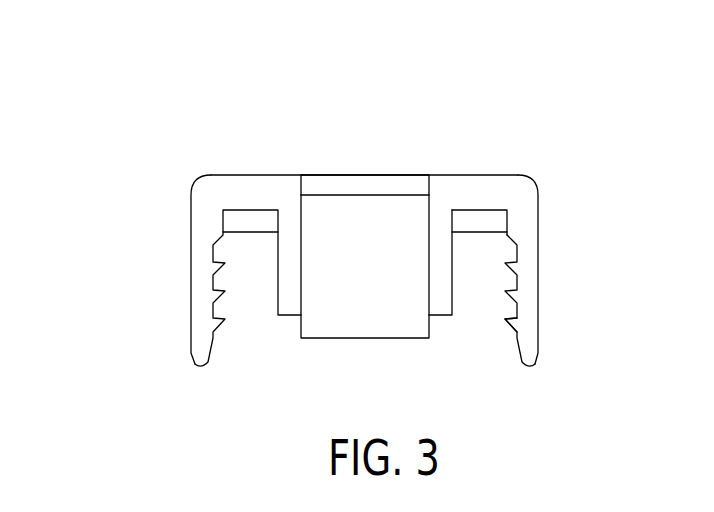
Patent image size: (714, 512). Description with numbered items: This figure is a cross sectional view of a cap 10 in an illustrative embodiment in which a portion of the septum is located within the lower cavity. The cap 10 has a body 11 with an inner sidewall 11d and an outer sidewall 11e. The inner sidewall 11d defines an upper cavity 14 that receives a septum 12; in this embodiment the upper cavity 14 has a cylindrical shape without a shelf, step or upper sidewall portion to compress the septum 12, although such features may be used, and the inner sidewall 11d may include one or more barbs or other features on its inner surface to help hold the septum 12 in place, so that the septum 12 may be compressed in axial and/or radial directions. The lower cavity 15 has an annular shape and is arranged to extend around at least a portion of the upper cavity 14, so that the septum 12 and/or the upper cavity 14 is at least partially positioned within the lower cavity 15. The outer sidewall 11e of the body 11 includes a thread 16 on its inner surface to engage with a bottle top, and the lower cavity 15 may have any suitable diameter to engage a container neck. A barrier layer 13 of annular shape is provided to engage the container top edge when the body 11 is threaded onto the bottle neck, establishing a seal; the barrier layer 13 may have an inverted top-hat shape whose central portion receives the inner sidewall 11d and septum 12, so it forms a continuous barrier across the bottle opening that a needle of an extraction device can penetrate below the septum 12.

The cap 10 is at (116, 111).
The body 11 is at (532, 223).
The inner sidewall 11d is at (440, 287).
The outer sidewall 11e is at (530, 340).
The septum 12 is at (378, 235).
The barrier layer 13 is at (468, 218).
The upper cavity 14 is at (305, 155).
The lower cavity 15 is at (239, 355).
The thread 16 is at (508, 330).